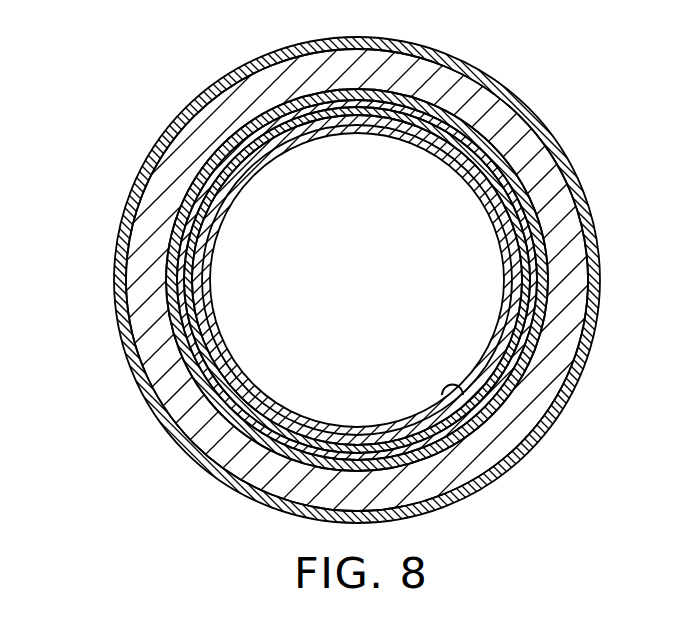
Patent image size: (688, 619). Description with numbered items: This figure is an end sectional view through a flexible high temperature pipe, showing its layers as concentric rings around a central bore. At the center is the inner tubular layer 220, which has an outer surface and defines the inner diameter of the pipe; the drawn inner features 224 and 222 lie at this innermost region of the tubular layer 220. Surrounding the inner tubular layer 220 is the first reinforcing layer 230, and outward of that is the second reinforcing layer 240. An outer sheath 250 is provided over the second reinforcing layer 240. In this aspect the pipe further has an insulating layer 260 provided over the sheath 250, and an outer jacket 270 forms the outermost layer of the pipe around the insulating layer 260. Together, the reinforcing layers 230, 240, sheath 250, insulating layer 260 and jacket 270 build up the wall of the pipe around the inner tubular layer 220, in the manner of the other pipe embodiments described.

The outer jacket 270 is at (118, 277).
The insulating layer 260 is at (150, 215).
The outer sheath 250 is at (200, 175).
The second reinforcing layer 240 is at (527, 233).
The first reinforcing layer 230 is at (518, 280).
The inner tubular layer 220 is at (540, 335).
The inner tube layer 224 is at (520, 389).
The wire element 222 is at (477, 427).